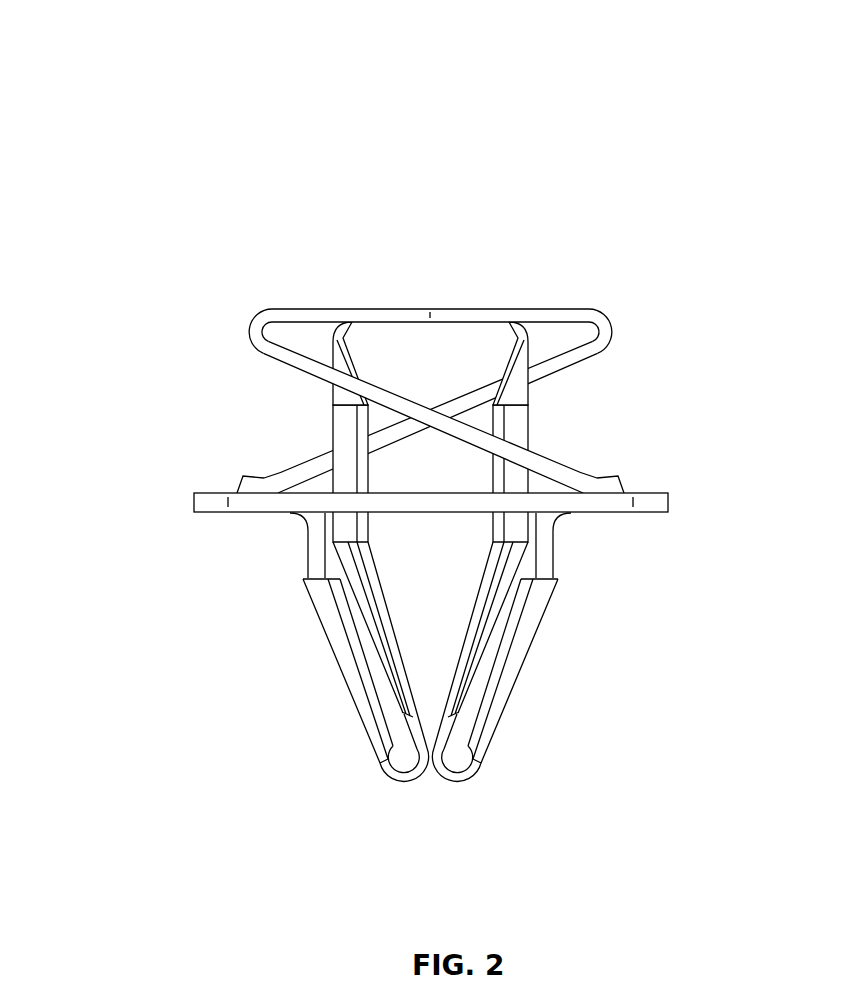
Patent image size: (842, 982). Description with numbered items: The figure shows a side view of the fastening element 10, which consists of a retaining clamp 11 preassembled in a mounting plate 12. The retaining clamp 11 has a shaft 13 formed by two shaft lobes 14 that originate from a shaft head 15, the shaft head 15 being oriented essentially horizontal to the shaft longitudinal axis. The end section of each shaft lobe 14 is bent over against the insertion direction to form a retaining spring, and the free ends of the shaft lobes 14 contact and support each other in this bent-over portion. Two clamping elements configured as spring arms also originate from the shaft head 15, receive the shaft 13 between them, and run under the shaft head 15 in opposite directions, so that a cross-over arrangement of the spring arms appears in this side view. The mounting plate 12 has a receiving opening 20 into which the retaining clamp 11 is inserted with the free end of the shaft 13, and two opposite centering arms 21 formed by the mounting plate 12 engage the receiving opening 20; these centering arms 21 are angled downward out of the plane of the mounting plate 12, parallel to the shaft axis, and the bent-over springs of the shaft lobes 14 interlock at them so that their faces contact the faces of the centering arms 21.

The fastening element 10 is at (451, 398).
The retaining clamp 11 is at (720, 403).
The mounting plate 12 is at (683, 503).
The shaft 13 is at (578, 423).
The shaft lobes 14 is at (463, 637).
The shaft head 15 is at (423, 300).
The receiving opening 20 is at (433, 488).
The centering arms 21 is at (308, 547).